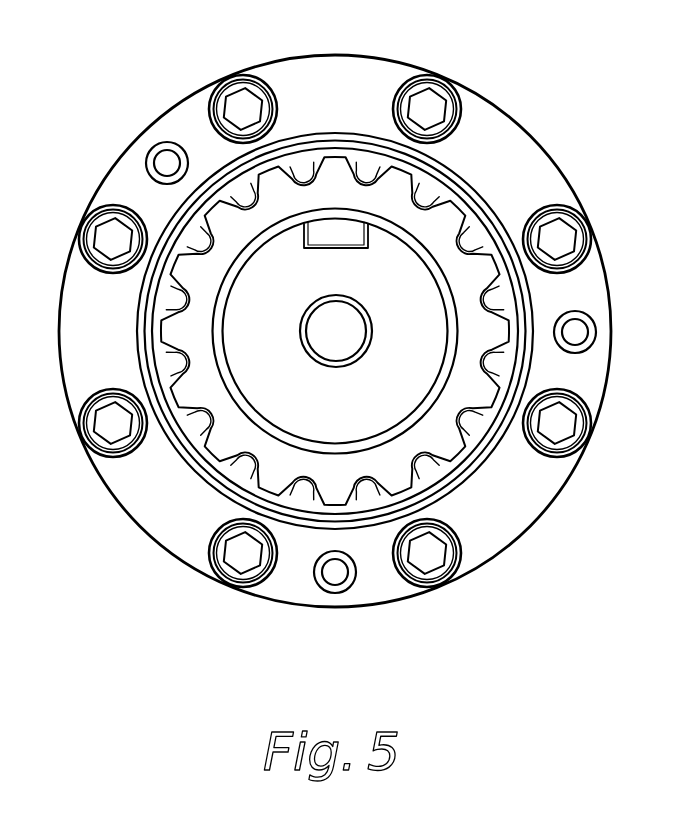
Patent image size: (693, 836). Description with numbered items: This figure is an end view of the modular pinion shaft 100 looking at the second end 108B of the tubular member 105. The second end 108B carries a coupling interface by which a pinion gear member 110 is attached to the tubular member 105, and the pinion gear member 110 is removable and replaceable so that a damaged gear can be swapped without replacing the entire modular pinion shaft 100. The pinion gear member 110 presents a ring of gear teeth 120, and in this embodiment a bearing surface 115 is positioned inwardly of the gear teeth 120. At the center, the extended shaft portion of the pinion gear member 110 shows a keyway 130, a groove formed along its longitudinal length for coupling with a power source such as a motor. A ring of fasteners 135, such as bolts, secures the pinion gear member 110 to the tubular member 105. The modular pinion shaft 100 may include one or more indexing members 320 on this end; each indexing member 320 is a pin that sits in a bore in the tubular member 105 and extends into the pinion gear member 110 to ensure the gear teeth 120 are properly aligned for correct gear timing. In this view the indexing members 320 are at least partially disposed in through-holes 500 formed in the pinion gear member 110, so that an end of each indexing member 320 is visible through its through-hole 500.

The modular pinion shaft 100 is at (130, 83).
The tubular member 105 is at (336, 55).
The second end 108B is at (151, 555).
The pinion gear member 110 is at (456, 461).
The bearing surface 115 is at (456, 172).
The gear teeth 120 is at (341, 166).
The keyway 130 is at (335, 240).
The fasteners 135 is at (250, 103).
The indexing member 320 is at (585, 336).
The through-hole 500 is at (150, 152).